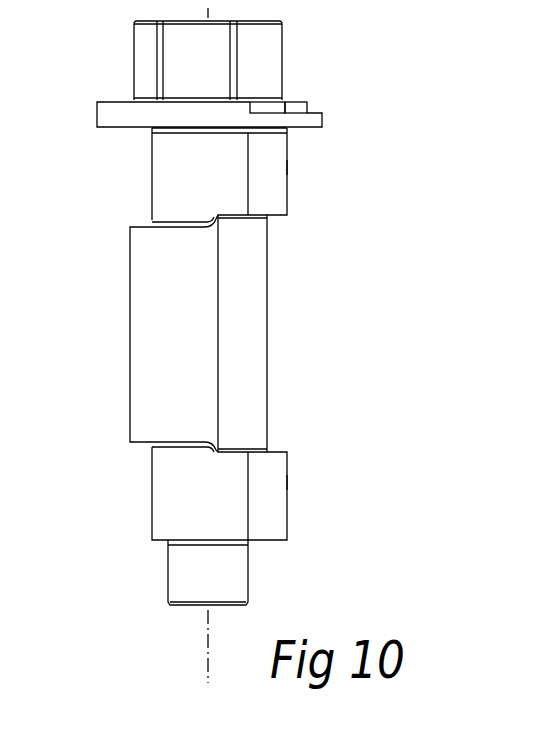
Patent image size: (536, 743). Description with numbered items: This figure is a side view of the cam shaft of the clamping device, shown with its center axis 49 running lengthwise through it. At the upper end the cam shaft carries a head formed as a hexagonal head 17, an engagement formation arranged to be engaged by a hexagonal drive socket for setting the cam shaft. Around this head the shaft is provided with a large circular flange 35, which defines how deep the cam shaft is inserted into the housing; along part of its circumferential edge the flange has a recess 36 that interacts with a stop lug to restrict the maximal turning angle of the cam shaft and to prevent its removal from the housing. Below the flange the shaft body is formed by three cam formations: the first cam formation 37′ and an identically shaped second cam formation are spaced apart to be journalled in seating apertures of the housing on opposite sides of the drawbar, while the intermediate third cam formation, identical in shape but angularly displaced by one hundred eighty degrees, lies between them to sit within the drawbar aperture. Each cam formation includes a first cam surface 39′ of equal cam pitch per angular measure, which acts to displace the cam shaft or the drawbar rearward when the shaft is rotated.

The hexagonal head 17 is at (270, 46).
The circular flange 35 is at (98, 113).
The recess 36 is at (310, 105).
The first cam formation 37′ is at (331, 191).
The first cam surface 39′ is at (280, 167).
The center axis 49 is at (208, 641).